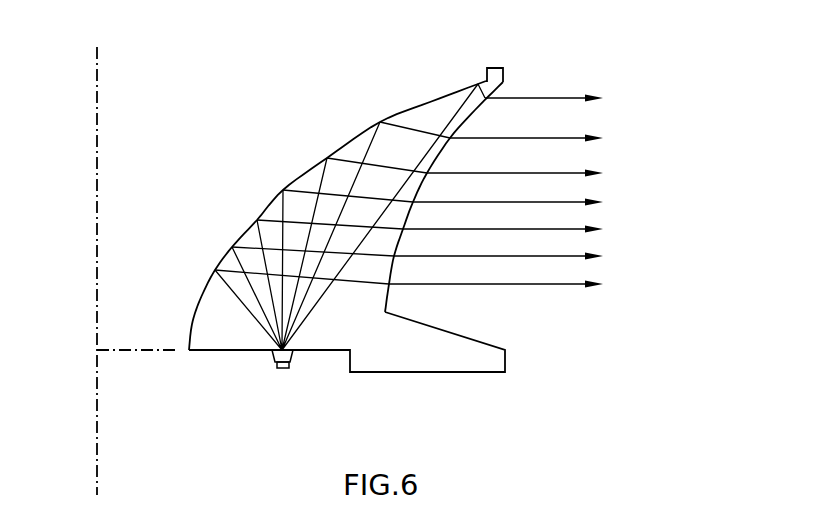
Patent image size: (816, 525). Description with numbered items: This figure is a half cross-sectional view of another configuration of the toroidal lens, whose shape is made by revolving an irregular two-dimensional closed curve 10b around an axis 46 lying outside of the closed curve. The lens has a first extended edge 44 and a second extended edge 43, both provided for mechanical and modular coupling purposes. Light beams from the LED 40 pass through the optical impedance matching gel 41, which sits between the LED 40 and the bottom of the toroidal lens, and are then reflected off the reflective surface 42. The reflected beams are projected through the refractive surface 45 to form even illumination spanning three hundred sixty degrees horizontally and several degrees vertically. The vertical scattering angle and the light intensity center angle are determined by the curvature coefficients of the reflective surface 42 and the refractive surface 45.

The irregular two-dimensional closed curve 10b is at (380, 197).
The LED 40 is at (283, 368).
The optical impedance matching gel 41 is at (272, 355).
The reflective surface 42 is at (300, 175).
The second extended edge 43 is at (495, 68).
The first extended edge 44 is at (443, 355).
The refractive surface 45 is at (447, 153).
The axis 46 is at (100, 270).